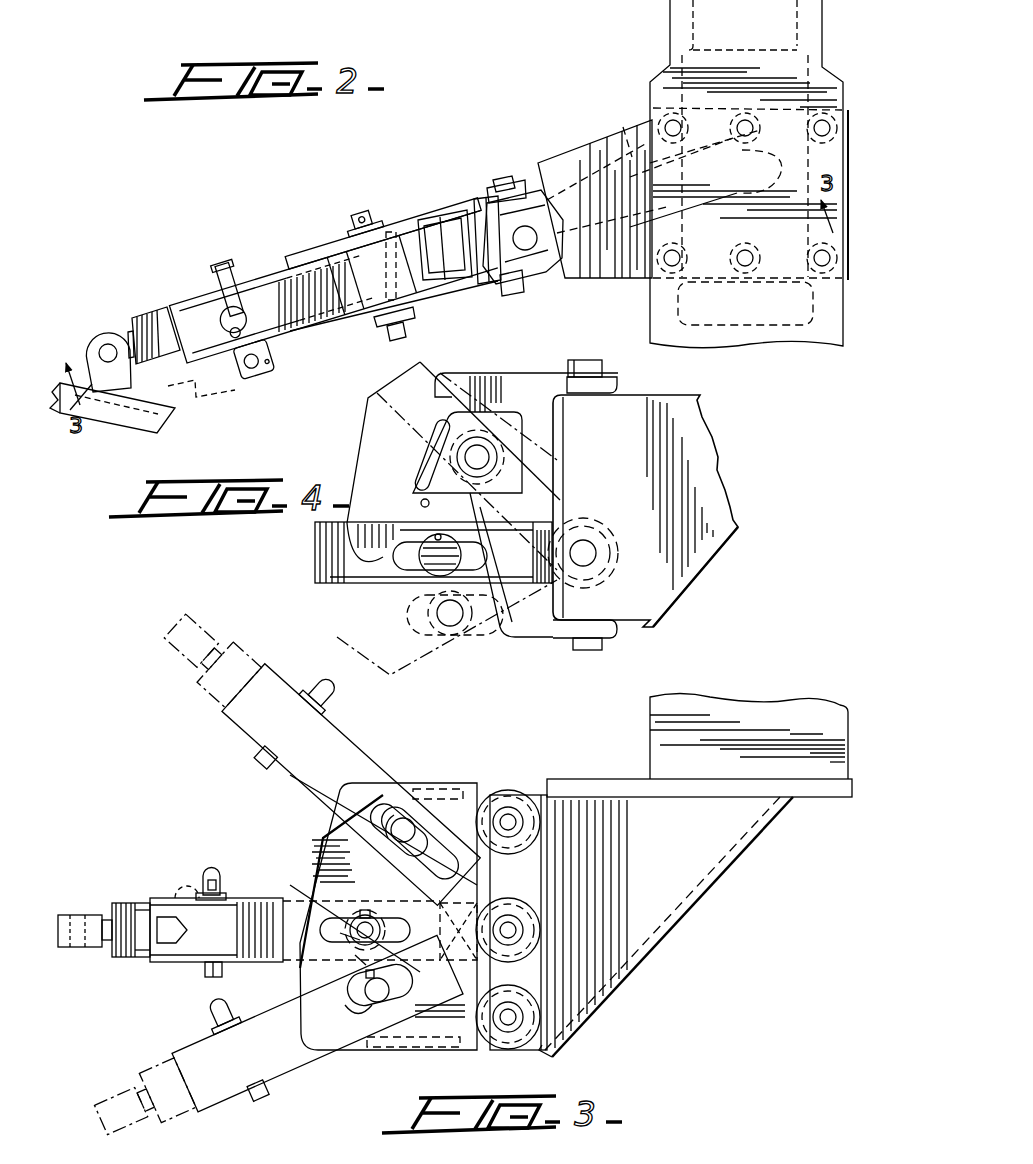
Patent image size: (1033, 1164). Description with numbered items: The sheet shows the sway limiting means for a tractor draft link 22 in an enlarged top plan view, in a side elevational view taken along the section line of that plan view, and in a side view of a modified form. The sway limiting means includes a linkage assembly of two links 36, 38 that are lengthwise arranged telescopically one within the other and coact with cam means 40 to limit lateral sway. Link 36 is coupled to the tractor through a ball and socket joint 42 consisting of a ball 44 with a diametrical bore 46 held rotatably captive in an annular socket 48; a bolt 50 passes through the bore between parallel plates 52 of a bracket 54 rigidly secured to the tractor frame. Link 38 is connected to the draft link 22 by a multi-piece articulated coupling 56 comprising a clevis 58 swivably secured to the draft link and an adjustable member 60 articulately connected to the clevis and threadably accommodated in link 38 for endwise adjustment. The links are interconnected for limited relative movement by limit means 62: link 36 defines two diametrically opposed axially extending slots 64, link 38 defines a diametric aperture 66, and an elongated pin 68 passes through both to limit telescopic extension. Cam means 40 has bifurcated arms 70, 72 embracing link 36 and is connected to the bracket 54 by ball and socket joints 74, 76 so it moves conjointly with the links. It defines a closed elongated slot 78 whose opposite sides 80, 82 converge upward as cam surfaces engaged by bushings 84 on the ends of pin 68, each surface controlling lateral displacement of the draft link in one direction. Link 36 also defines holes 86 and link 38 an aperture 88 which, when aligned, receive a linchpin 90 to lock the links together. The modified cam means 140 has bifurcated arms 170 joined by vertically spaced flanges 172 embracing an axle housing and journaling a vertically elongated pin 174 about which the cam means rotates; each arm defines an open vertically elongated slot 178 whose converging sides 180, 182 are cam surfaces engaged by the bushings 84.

In FIG. 2, the draft link 22 is at (150, 424).
In FIG. 2, the link 36 is at (283, 318).
In FIG. 3, the link 36 is at (268, 918).
In FIG. 2, the link 38 is at (151, 320).
In FIG. 3, the link 38 is at (135, 902).
In FIG. 2, the cam means 40 is at (453, 313).
In FIG. 3, the ball and socket joint 42 is at (541, 920).
In FIG. 3, the ball 44 is at (520, 963).
In FIG. 3, the diametrical bore 46 is at (540, 944).
In FIG. 3, the annular socket 48 is at (524, 895).
In FIG. 2, the bolt 50 is at (531, 281).
In FIG. 2, the parallel plates 52 is at (549, 264).
In FIG. 3, the parallel plates 52 is at (647, 915).
In FIG. 2, the bracket 54 is at (623, 127).
In FIG. 3, the bracket 54 is at (684, 848).
In FIG. 2, the multi-piece articulated coupling 56 is at (101, 328).
In FIG. 3, the multi-piece articulated coupling 56 is at (86, 913).
In FIG. 2, the clevis 58 is at (93, 349).
In FIG. 2, the adjustable member 60 is at (111, 330).
In FIG. 2, the limit means 62 is at (374, 214).
In FIG. 4, the limit means 62 is at (430, 567).
In FIG. 3, the limit means 62 is at (348, 914).
In FIG. 2, the axially extending slots 64 is at (333, 255).
In FIG. 3, the axially extending slots 64 is at (352, 935).
In FIG. 2, the diametric aperture 66 is at (415, 238).
In FIG. 3, the diametric aperture 66 is at (358, 960).
In FIG. 2, the elongated pin 68 is at (409, 337).
In FIG. 3, the elongated pin 68 is at (368, 912).
In FIG. 3, the bifurcated arm 70 is at (356, 794).
In FIG. 2, the bifurcated arm 72 is at (299, 246).
In FIG. 3, the ball and socket joint 74 is at (509, 792).
In FIG. 3, the ball and socket joint 76 is at (509, 1052).
In FIG. 3, the closed elongated slot 78 is at (357, 1020).
In FIG. 3, the cam surface 80 is at (322, 840).
In FIG. 3, the cam surface 82 is at (437, 870).
In FIG. 2, the bushings 84 is at (393, 232).
In FIG. 4, the bushings 84 is at (447, 563).
In FIG. 3, the bushings 84 is at (352, 990).
In FIG. 3, the apertures 86 is at (183, 895).
In FIG. 3, the diametrical aperture 88 is at (215, 930).
In FIG. 2, the linchpin 90 is at (229, 268).
In FIG. 3, the linchpin 90 is at (221, 865).
In FIG. 4, the cam means 140 is at (378, 458).
In FIG. 4, the bifurcated arms 170 is at (510, 390).
In FIG. 4, the flanges 172 is at (620, 386).
In FIG. 4, the vertically elongated pin 174 is at (600, 360).
In FIG. 4, the open vertically elongated slot 178 is at (420, 548).
In FIG. 4, the cam surface 180 is at (421, 502).
In FIG. 4, the cam surface 182 is at (482, 530).